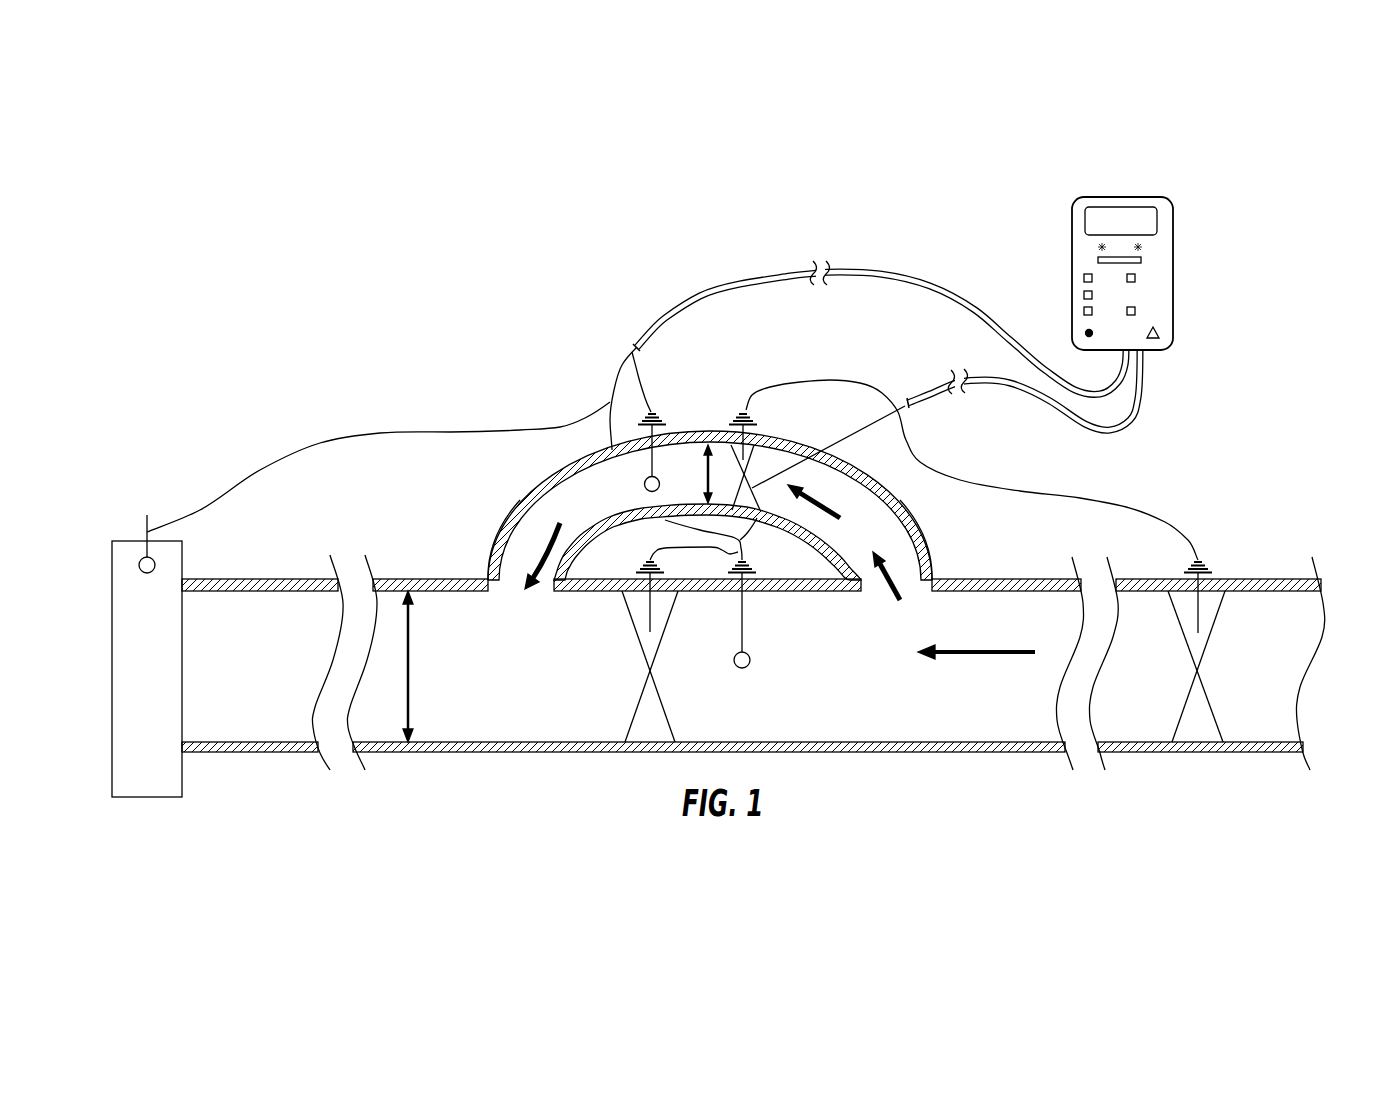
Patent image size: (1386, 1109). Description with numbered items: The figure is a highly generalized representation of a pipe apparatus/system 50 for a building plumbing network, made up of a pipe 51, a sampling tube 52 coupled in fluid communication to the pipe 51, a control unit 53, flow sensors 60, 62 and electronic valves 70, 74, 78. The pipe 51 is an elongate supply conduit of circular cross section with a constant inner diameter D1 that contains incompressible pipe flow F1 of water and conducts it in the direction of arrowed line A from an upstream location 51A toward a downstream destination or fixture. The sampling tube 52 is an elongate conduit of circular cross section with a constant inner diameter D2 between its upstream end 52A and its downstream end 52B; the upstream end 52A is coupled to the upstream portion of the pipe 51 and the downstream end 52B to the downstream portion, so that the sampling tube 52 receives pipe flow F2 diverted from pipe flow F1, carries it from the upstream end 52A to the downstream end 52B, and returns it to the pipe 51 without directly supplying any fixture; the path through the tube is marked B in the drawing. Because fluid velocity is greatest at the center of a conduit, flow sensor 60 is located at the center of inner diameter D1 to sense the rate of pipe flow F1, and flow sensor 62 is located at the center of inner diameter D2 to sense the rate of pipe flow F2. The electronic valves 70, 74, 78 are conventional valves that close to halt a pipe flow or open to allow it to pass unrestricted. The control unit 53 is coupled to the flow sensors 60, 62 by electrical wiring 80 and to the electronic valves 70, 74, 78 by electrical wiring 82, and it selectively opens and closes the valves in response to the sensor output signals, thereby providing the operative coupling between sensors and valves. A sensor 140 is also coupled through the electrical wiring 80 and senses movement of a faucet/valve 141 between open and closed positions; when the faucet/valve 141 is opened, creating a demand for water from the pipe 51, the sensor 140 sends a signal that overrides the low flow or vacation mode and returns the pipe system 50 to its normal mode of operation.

The pipe apparatus/system 50 is at (606, 336).
The pipe 51 is at (296, 578).
The upstream location 51A is at (1372, 641).
The sampling tube 52 is at (545, 481).
The upstream end 52A is at (934, 577).
The downstream end 52B is at (491, 563).
The control unit 53 is at (1173, 278).
The flow sensor 60 is at (749, 664).
The flow sensor 62 is at (645, 486).
The electronic valve 70 is at (630, 622).
The electronic valve 74 is at (1208, 700).
The electronic valve 78 is at (755, 486).
The electrical wiring 80 is at (630, 380).
The electrical wiring 82 is at (903, 428).
The sensor 140 is at (156, 563).
The faucet/valve 141 is at (112, 633).
The arrowed line A is at (975, 654).
The flow path B is at (825, 507).
The inner diameter D1 is at (410, 658).
The inner diameter D2 is at (708, 473).
The pipe flow F1 is at (845, 657).
The pipe flow F2 is at (712, 542).